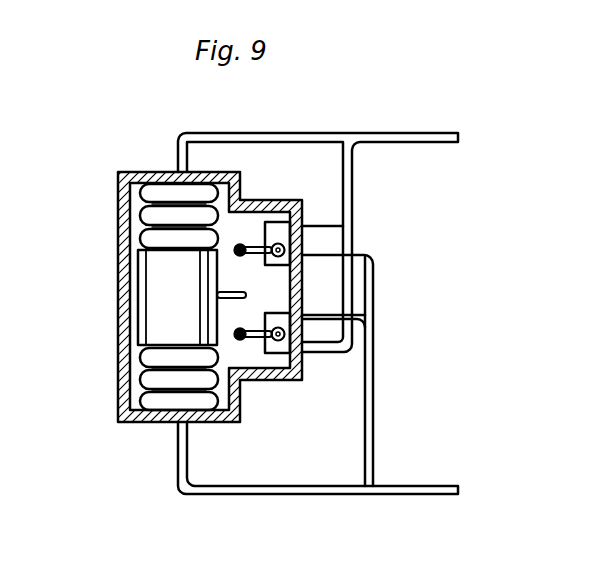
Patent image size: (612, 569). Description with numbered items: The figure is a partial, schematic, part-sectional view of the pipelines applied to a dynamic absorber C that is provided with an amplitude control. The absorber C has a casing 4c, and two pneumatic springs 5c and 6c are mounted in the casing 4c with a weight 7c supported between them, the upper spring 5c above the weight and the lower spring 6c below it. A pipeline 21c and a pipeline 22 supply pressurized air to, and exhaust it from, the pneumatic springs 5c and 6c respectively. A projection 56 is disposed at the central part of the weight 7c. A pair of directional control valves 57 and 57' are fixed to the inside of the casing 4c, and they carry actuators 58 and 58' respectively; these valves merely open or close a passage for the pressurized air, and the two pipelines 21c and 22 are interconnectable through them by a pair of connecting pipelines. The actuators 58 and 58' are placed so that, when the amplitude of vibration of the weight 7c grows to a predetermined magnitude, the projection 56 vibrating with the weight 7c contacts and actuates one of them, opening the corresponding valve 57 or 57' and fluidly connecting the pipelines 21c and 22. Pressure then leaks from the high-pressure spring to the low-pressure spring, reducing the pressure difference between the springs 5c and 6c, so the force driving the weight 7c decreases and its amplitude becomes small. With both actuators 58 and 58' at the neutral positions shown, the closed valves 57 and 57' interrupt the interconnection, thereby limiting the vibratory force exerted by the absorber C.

The dynamic absorber C is at (124, 172).
The casing 4c is at (120, 270).
The pneumatic spring 5c is at (150, 214).
The pneumatic spring 6c is at (148, 381).
The weight 7c is at (148, 307).
The pipeline 21c is at (249, 133).
The pipeline 22 is at (222, 494).
The projection 56 is at (246, 296).
The directional control valve 57 is at (325, 348).
The directional control valve 57' is at (299, 367).
The actuator 58 is at (282, 214).
The actuator 58' is at (267, 368).